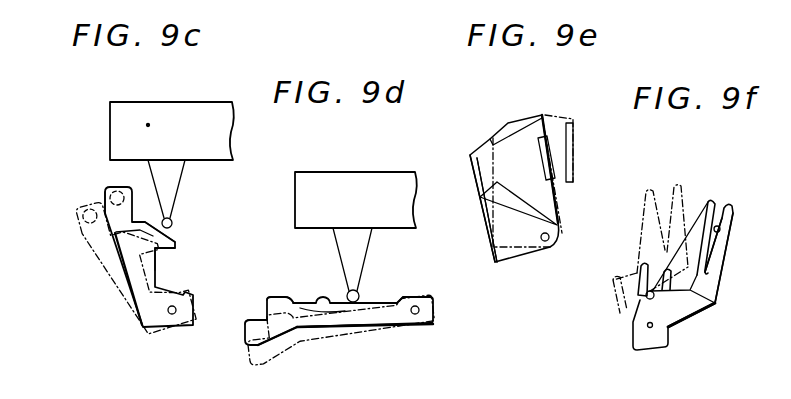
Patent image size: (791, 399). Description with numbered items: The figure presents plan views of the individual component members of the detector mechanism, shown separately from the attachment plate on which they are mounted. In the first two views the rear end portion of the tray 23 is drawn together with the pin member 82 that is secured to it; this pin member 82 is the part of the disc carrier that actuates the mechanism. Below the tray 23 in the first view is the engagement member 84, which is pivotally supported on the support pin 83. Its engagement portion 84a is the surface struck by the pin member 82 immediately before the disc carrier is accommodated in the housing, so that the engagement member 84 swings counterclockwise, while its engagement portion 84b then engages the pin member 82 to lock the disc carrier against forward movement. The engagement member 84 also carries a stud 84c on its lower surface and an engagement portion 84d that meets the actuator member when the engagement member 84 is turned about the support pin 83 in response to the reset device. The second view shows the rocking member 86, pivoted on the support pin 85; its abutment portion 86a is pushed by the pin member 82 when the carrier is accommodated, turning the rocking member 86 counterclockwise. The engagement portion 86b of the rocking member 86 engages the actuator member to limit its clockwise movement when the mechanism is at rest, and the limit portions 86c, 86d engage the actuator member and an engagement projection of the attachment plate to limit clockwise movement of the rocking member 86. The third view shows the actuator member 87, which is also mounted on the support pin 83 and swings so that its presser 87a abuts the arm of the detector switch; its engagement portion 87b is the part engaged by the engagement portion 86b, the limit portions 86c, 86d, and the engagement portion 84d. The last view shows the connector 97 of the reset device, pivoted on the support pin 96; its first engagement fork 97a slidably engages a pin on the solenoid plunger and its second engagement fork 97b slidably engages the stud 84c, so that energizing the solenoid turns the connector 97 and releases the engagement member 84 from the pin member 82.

In FIG. 9c, the tray 23 is at (122, 112).
In FIG. 9d, the tray 23 is at (313, 178).
In FIG. 9c, the pin member 82 is at (175, 220).
In FIG. 9d, the pin member 82 is at (362, 292).
In FIG. 9c, the support pin 83 is at (174, 314).
In FIG. 9e, the support pin 83 is at (550, 237).
In FIG. 9c, the engagement member 84 is at (100, 255).
In FIG. 9c, the engagement portion 84a is at (172, 234).
In FIG. 9c, the engagement portion 84b is at (163, 255).
In FIG. 9c, the stud 84c is at (103, 186).
In FIG. 9c, the engagement portion 84d is at (98, 193).
In FIG. 9d, the support pin 85 is at (420, 314).
In FIG. 9d, the rocking member 86 is at (368, 348).
In FIG. 9d, the abutment portion 86a is at (320, 307).
In FIG. 9d, the engagement portion 86b is at (284, 302).
In FIG. 9d, the limit portion 86c is at (252, 316).
In FIG. 9d, the limit portion 86d is at (395, 315).
In FIG. 9e, the actuator member 87 is at (556, 105).
In FIG. 9e, the presser 87a is at (555, 162).
In FIG. 9e, the engagement portion 87b is at (471, 162).
In FIG. 9f, the support pin 96 is at (647, 326).
In FIG. 9f, the connector 97 is at (719, 184).
In FIG. 9f, the first engagement fork 97a is at (711, 303).
In FIG. 9f, the second engagement fork 97b is at (720, 231).